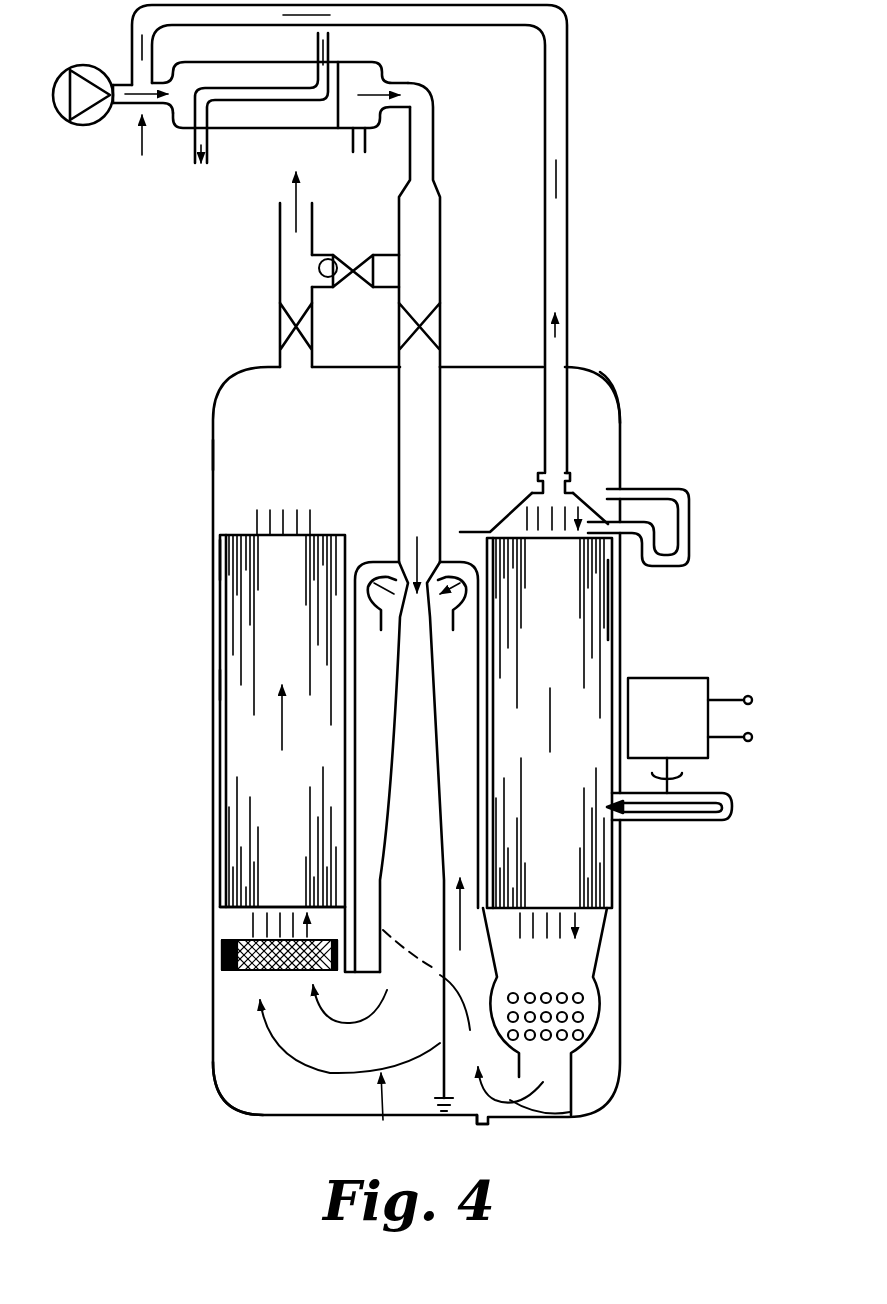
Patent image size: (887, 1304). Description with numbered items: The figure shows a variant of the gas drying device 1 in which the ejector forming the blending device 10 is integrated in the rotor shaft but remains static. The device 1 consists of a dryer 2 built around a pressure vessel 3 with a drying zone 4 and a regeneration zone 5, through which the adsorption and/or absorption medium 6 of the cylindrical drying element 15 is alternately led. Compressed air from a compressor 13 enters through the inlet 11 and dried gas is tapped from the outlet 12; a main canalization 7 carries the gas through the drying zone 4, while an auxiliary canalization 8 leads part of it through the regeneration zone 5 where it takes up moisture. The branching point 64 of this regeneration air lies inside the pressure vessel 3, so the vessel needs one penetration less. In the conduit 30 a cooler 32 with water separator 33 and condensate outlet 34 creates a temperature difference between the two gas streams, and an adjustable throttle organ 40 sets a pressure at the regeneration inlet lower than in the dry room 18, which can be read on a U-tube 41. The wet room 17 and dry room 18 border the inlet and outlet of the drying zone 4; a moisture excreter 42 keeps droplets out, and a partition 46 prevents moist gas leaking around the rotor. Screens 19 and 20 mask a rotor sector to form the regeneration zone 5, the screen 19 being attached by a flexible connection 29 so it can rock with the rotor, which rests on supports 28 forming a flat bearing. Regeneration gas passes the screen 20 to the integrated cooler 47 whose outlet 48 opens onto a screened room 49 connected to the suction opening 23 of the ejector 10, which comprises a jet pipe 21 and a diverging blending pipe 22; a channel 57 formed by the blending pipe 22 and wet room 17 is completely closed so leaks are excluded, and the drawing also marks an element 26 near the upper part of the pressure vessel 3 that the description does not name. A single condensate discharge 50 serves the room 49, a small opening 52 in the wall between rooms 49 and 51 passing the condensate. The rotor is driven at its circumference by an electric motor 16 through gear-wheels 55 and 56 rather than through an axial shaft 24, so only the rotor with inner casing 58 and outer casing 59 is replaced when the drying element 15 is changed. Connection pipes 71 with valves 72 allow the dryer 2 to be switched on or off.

The device 1 is at (142, 1020).
The dryer 2 is at (210, 385).
The pressure vessel 3 is at (621, 412).
The drying zone 4 is at (268, 820).
The regeneration zone 5 is at (550, 635).
The adsorption and/or absorption medium 6 is at (608, 598).
The main canalization 7 is at (450, 410).
The auxiliary canalization 8 is at (568, 250).
The blending device 10 is at (353, 595).
The inlet 11 is at (122, 112).
The outlet 12 is at (288, 222).
The compressor 13 is at (105, 65).
The drying element 15 is at (267, 598).
The electric motor 16 is at (642, 685).
The wet room 17 is at (272, 1080).
The dry room 18 is at (213, 458).
The screen 19 is at (585, 500).
The screen 20 is at (605, 937).
The jet pipe 21 is at (412, 560).
The blending pipe 22 is at (378, 753).
The suction opening 23 is at (398, 600).
The axial shaft 24 is at (418, 1013).
The annular space 26 is at (440, 457).
The supports 28 is at (327, 897).
The flexible connection 29 is at (567, 480).
The conduit 30 is at (433, 133).
The cooler 32 is at (272, 122).
The water separator 33 is at (377, 72).
The condensate outlet 34 is at (380, 138).
The adjustable throttle organ 40 is at (567, 330).
The U-tube 41 is at (666, 497).
The moisture excreter 42 is at (222, 958).
The partition 46 is at (217, 558).
The cooler 47 is at (597, 1027).
The outlet 48 is at (570, 1070).
The screened room 49 is at (570, 1113).
The condensate discharge 50 is at (513, 1128).
The room 51 is at (227, 1060).
The small opening 52 is at (440, 1112).
The gear-wheel 55 is at (700, 808).
The gear-wheel 56 is at (632, 810).
The channel 57 is at (381, 1114).
The inner casing 58 is at (350, 718).
The outer casing 59 is at (220, 683).
The branching point 64 is at (139, 159).
The connection pipes 71 is at (317, 285).
The valves 72 is at (322, 258).